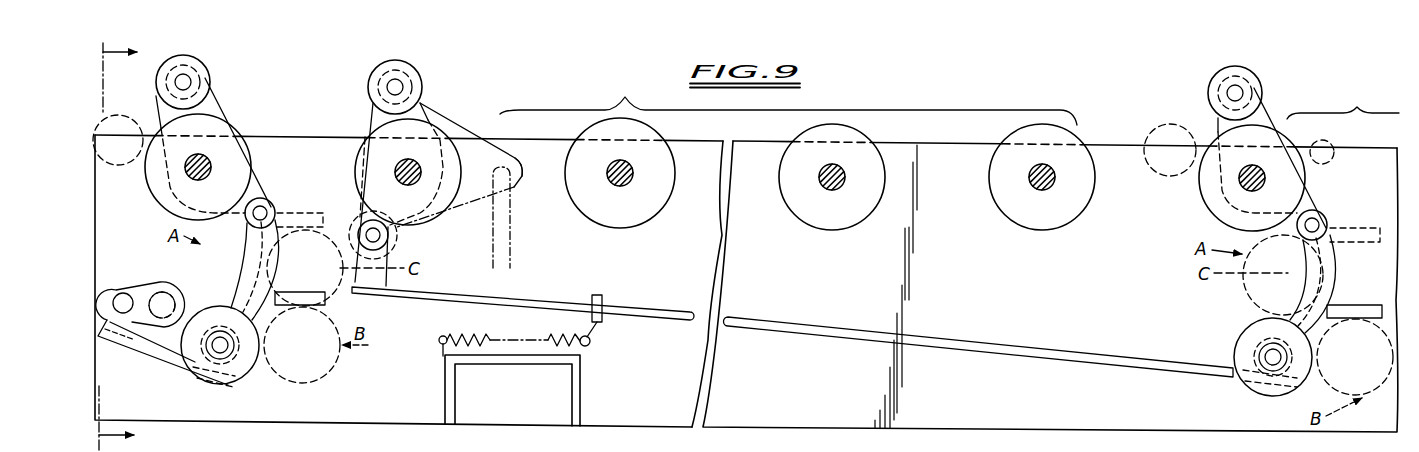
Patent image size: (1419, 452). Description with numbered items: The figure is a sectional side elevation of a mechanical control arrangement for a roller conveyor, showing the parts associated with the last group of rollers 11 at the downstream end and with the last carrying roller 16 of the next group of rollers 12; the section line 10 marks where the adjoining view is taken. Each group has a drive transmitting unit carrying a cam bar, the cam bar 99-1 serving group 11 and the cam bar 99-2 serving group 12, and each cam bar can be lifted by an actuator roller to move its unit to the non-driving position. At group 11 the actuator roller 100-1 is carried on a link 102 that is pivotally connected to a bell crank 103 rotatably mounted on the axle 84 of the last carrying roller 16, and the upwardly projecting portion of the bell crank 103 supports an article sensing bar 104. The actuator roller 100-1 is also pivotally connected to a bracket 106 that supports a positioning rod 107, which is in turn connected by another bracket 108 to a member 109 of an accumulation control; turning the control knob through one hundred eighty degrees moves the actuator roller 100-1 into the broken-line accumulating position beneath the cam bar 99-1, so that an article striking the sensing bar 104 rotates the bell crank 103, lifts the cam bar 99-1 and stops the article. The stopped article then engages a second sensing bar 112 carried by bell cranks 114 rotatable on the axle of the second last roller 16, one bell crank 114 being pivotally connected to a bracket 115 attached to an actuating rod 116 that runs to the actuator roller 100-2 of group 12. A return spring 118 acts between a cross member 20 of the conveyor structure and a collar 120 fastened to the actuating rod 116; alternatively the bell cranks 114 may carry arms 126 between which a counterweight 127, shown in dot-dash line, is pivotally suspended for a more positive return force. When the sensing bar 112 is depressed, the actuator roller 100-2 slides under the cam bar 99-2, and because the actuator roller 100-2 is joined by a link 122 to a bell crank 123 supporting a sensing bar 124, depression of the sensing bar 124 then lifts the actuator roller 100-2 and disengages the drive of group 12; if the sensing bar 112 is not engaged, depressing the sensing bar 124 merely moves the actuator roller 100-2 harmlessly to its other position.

The section line 10 is at (118, 240).
The last group of rollers 11 is at (788, 97).
The next group of rollers 12 is at (1343, 100).
The carrying roller 16 is at (225, 127).
The cross member 20 is at (580, 405).
The axle 84 is at (210, 160).
The cam bar 99-1 is at (296, 214).
The cam bar 99-2 is at (1358, 305).
The actuator roller 100-1 is at (248, 378).
The actuator roller 100-2 is at (1234, 340).
The link 102 is at (243, 258).
The bell crank 103 is at (263, 195).
The article sensing bar 104 is at (209, 84).
The bracket 106 is at (197, 372).
The positioning rod 107 is at (158, 357).
The bracket 108 is at (104, 295).
The member 109 is at (166, 282).
The second sensing bar 112 is at (420, 80).
The bell cranks 114 is at (425, 111).
The bracket 115 is at (389, 246).
The actuating rod 116 is at (934, 336).
The return spring 118 is at (588, 346).
The collar 120 is at (603, 297).
The link 122 is at (1298, 290).
The bell crank 123 is at (1318, 210).
The sensing bar 124 is at (1262, 91).
The arms 126 is at (518, 160).
The counterweight 127 is at (513, 212).